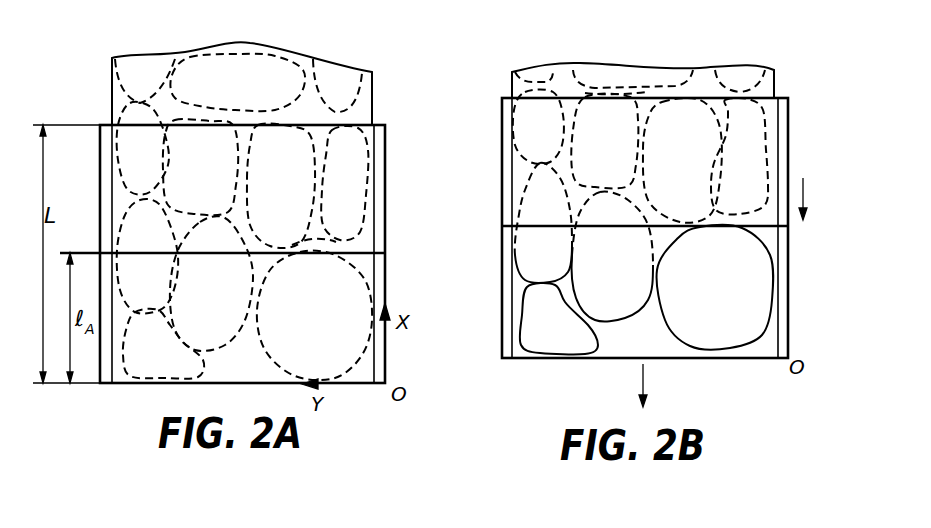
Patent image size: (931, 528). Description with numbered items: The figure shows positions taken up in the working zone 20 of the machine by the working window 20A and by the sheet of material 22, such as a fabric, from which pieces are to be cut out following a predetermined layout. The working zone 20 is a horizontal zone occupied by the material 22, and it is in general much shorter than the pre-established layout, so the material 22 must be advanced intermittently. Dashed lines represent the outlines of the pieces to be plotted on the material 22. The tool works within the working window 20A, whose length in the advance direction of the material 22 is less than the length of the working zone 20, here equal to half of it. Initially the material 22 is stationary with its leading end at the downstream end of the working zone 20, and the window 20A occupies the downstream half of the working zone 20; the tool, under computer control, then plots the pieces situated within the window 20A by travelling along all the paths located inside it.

In FIG. 2A, the working zone 20 is at (385, 182).
In FIG. 2B, the working zone 20 is at (789, 320).
In FIG. 2A, the working window 20A is at (375, 250).
In FIG. 2B, the working window 20A is at (776, 232).
In FIG. 2A, the sheet of material 22 is at (372, 98).
In FIG. 2B, the sheet of material 22 is at (738, 67).